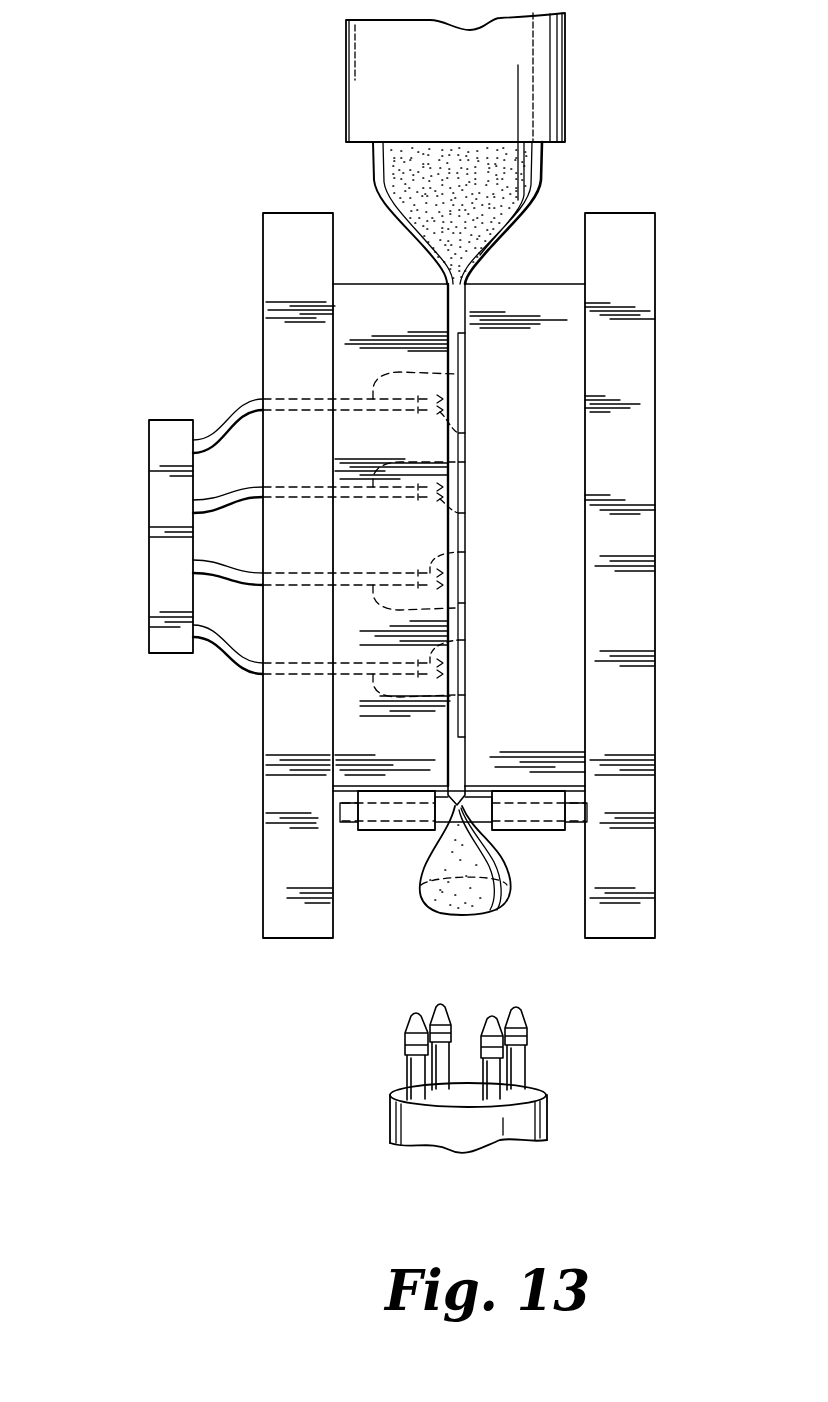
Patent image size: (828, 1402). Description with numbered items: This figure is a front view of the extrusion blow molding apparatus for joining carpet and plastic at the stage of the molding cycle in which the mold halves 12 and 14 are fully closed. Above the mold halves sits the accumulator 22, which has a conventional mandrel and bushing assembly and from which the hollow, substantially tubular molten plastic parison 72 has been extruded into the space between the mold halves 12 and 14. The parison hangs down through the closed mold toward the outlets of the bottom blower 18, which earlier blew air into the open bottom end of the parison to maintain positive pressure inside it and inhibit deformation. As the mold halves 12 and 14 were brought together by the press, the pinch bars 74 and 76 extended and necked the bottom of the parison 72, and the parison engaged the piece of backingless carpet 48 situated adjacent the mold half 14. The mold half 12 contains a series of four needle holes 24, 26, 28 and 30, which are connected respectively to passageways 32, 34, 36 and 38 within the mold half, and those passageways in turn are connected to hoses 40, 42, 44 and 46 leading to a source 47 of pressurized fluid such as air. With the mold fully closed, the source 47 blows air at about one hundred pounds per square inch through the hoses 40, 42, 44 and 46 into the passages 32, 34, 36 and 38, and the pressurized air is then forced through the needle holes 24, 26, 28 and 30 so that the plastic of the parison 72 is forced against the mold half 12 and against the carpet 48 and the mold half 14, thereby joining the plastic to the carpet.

The mold half 12 is at (340, 345).
The mold half 14 is at (570, 428).
The bottom blower 18 is at (548, 1113).
The accumulator 22 is at (568, 100).
The needle hole 24 is at (467, 640).
The needle hole 26 is at (467, 552).
The needle hole 28 is at (467, 513).
The needle hole 30 is at (467, 433).
The passageway 32 is at (455, 695).
The passageway 34 is at (455, 608).
The passageway 36 is at (455, 462).
The passageway 38 is at (455, 374).
The hose 40 is at (233, 667).
The hose 42 is at (230, 585).
The hose 44 is at (228, 510).
The hose 46 is at (230, 432).
The source of pressurized fluid 47 is at (148, 587).
The backingless carpet 48 is at (458, 357).
The parison 72 is at (543, 172).
The pinch bar 74 is at (348, 823).
The pinch bar 76 is at (575, 823).